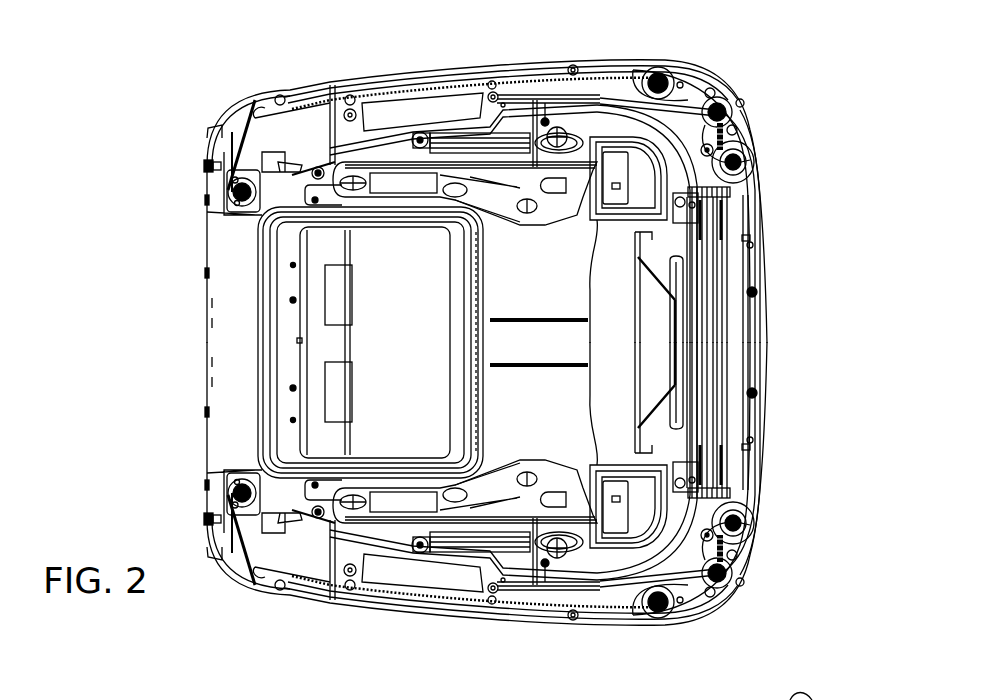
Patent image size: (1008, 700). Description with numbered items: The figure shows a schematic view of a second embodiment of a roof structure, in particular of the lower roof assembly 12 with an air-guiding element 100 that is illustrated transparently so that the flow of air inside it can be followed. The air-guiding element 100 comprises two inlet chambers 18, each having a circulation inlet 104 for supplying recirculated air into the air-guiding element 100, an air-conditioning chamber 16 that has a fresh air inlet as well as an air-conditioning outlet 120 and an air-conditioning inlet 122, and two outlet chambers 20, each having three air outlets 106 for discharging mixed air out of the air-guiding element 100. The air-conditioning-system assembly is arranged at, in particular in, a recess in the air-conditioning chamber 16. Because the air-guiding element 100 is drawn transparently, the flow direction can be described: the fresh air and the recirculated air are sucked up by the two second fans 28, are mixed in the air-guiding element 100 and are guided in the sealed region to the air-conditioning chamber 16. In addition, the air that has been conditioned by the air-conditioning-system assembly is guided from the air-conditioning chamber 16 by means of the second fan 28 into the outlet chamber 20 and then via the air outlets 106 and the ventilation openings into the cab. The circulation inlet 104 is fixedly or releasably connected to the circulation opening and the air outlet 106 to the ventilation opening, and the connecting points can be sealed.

The lower roof assembly 12 is at (238, 397).
The air-conditioning chamber 16 is at (741, 232).
The inlet chamber 18 is at (573, 567).
The outlet chamber 20 is at (560, 213).
The second fan 28 is at (597, 250).
The air-guiding element 100 is at (841, 695).
The circulation inlet 104 is at (463, 147).
The air outlet 106 is at (453, 197).
The air-conditioning outlet 120 is at (727, 320).
The air-conditioning inlet 122 is at (640, 397).